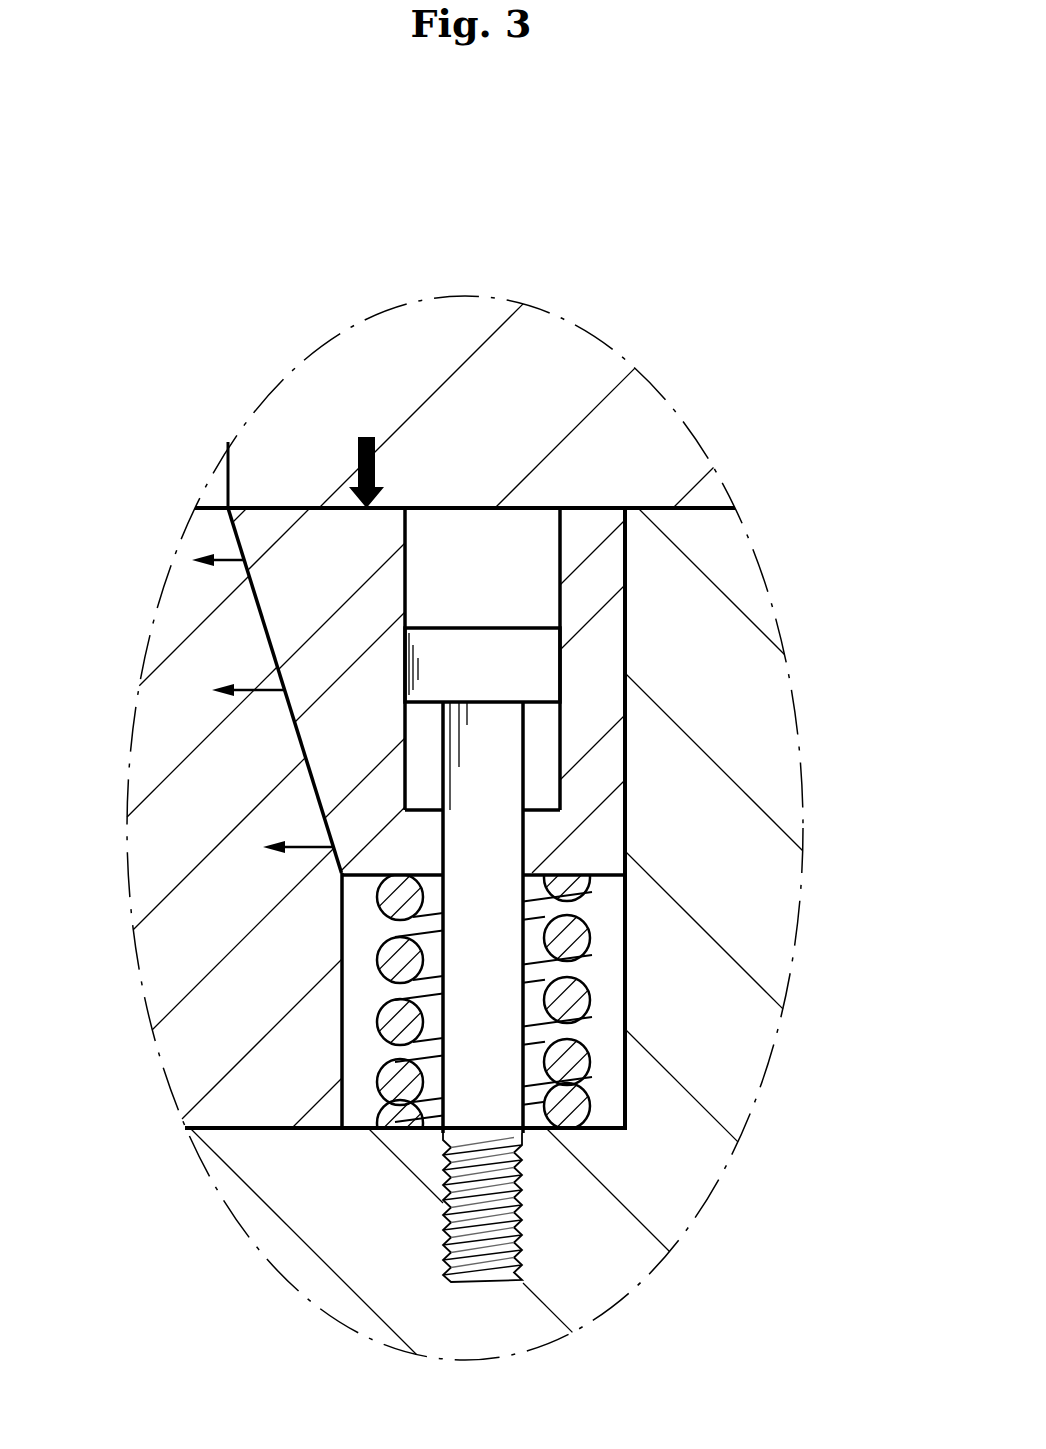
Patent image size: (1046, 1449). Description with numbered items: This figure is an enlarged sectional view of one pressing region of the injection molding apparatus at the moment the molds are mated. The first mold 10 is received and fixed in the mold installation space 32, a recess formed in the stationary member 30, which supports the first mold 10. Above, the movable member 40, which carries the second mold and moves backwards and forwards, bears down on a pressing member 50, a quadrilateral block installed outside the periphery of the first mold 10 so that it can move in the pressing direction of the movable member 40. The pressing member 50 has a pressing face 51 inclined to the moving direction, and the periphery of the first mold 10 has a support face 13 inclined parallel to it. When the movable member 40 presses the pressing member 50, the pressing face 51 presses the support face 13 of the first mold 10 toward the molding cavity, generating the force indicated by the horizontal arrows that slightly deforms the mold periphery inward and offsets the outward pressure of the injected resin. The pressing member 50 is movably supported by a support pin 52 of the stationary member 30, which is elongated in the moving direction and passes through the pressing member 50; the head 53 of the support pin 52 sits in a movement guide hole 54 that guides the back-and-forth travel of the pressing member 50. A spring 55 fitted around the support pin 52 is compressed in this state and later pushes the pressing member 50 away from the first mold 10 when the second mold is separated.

The first mold 10 is at (163, 980).
The support face 13 is at (306, 764).
The stationary member 30 is at (752, 1003).
The mold installation space 32 is at (257, 1128).
The movable member 40 is at (573, 352).
The pressing member 50 is at (602, 725).
The pressing face 51 is at (258, 600).
The support pin 52 is at (502, 838).
The head 53 is at (540, 670).
The movement guide hole 54 is at (560, 568).
The spring 55 is at (597, 1105).